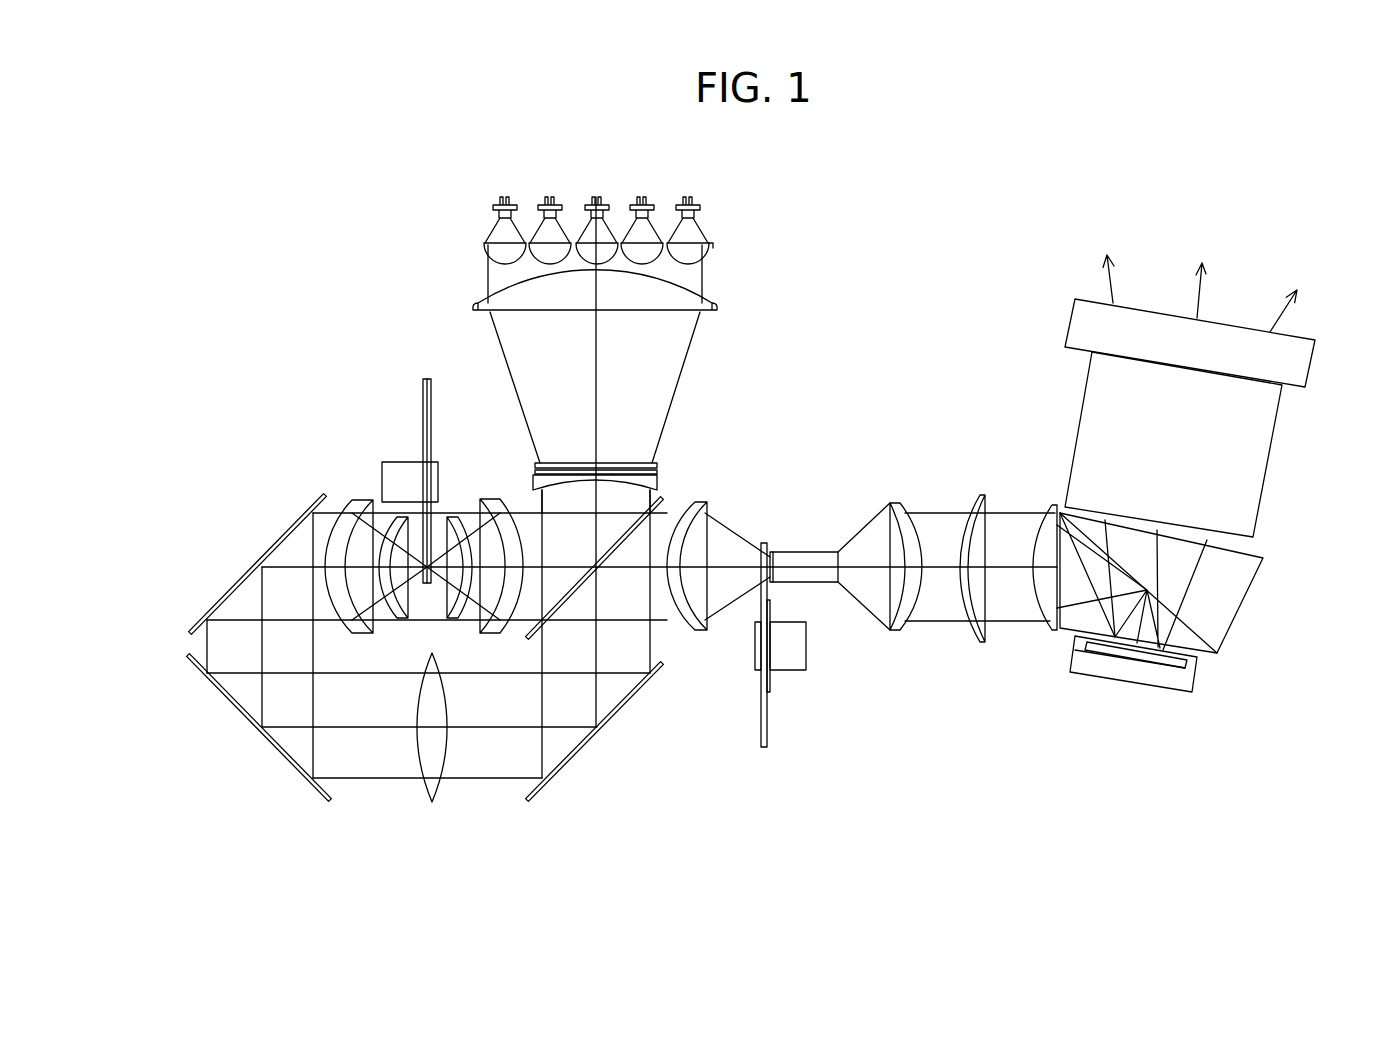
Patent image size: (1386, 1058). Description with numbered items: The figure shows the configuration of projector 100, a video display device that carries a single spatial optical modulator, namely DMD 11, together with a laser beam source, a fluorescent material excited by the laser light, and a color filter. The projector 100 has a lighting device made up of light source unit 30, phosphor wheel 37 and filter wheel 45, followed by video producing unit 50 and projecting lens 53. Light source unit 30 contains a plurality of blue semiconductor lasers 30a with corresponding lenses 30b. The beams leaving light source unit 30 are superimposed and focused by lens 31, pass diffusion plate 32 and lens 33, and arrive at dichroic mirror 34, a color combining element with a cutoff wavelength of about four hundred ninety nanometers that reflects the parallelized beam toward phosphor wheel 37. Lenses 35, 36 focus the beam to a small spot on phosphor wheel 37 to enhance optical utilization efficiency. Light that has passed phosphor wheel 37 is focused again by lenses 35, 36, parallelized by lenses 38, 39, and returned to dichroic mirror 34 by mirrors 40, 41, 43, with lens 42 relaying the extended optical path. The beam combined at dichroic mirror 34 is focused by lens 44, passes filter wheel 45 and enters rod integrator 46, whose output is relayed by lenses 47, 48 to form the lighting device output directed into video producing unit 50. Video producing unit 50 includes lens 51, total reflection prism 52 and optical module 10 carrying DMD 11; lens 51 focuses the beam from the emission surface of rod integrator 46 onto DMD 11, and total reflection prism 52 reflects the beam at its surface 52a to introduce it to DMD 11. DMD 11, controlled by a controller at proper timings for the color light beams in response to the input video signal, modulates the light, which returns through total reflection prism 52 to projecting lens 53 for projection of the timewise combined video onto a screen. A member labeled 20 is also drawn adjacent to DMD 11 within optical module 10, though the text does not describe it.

The projector 100 is at (1141, 185).
The light source unit 30 is at (814, 183).
The blue semiconductor lasers 30a is at (703, 208).
The lenses 30b is at (712, 245).
The lens 31 is at (713, 305).
The diffusion plate 32 is at (655, 466).
The lens 33 is at (660, 478).
The dichroic mirror 34 is at (663, 500).
The lens 35 is at (493, 507).
The lens 36 is at (453, 523).
The phosphor wheel 37 is at (423, 385).
The lens 38 is at (400, 523).
The lens 39 is at (353, 508).
The mirror 40 is at (285, 535).
The mirror 41 is at (292, 760).
The lens 42 is at (430, 788).
The mirror 43 is at (588, 742).
The lens 44 is at (703, 625).
The filter wheel 45 is at (767, 735).
The rod integrator 46 is at (803, 552).
The lens 47 is at (893, 503).
The lens 48 is at (983, 495).
The video producing unit 50 is at (1318, 768).
The lens 51 is at (1048, 630).
The total reflection prism 52 is at (1245, 570).
The surface 52a is at (1200, 637).
The projecting lens 53 is at (1105, 393).
The optical module 10 is at (1216, 683).
The DMD 11 is at (1115, 650).
The holding member 20 is at (1152, 675).